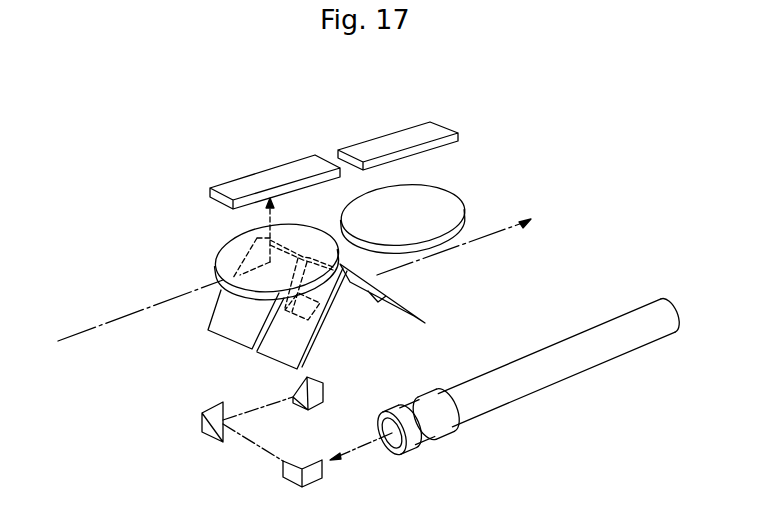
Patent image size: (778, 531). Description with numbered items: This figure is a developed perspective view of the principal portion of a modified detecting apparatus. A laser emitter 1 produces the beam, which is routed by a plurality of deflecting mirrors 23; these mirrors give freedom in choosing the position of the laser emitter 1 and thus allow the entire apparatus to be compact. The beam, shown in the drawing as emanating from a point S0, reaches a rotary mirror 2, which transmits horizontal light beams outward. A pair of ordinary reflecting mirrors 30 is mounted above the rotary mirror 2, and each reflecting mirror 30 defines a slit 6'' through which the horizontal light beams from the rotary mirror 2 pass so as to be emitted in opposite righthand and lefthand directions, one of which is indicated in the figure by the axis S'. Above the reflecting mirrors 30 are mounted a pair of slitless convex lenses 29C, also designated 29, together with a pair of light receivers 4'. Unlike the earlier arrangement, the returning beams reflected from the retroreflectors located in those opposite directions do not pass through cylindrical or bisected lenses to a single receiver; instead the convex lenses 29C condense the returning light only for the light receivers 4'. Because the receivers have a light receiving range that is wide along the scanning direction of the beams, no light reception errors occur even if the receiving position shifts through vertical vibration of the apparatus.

The laser emitter 1 is at (522, 362).
The rotary mirror 2 is at (322, 312).
The light receivers 4' is at (334, 151).
The slit 6'' is at (253, 372).
The deflecting mirrors 23 is at (206, 434).
The slitless convex lenses 29C is at (358, 231).
The convex lenses 29 is at (218, 256).
The reflecting mirrors 30 is at (212, 334).
The light source point S0 is at (308, 365).
The optical axis S' is at (139, 338).